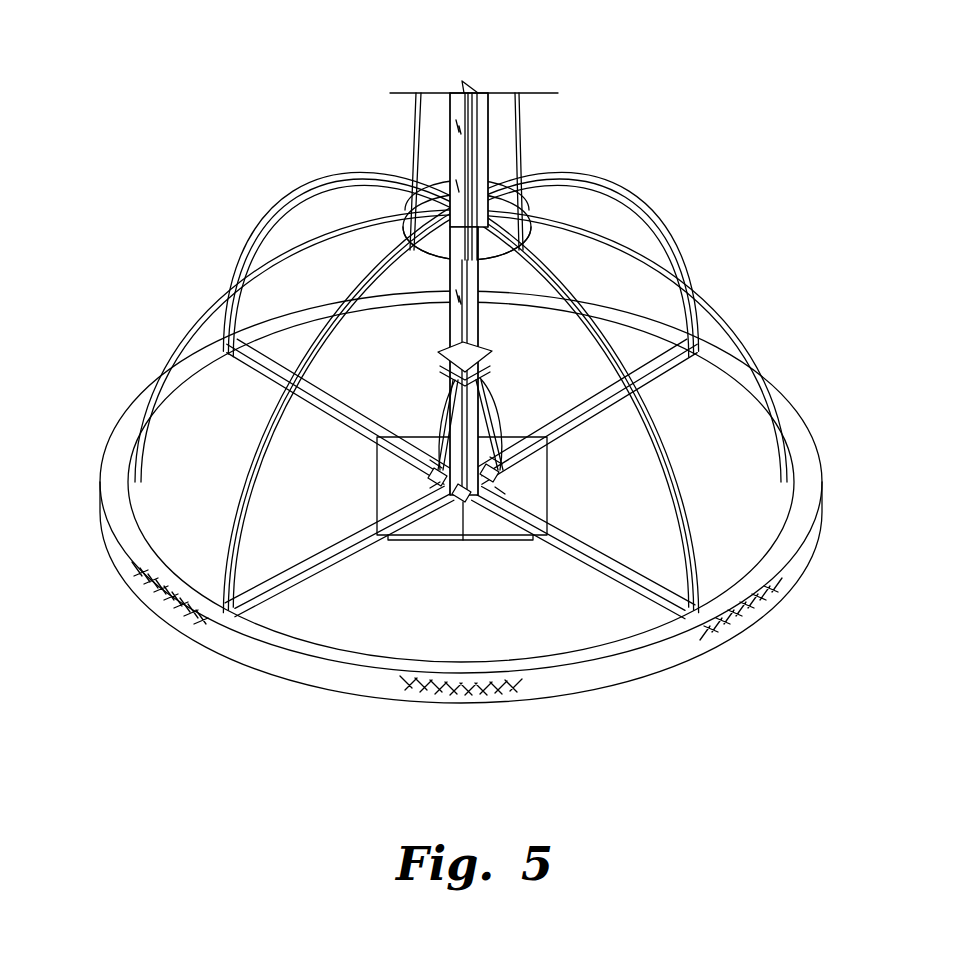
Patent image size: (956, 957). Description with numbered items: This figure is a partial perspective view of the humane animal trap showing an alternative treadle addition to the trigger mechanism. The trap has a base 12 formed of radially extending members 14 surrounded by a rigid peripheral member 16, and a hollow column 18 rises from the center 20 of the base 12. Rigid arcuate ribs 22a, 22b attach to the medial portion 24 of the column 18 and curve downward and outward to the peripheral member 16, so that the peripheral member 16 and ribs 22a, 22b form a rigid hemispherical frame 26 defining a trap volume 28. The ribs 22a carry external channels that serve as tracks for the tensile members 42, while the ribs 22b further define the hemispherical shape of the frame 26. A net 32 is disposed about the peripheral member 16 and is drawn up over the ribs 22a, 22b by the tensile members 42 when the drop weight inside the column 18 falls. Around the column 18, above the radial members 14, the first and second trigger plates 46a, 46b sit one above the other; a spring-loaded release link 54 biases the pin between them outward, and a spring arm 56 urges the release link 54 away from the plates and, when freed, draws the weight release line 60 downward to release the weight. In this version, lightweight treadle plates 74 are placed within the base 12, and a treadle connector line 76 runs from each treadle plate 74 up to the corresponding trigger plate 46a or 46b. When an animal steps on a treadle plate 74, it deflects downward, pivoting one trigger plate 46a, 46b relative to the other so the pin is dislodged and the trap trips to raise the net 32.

The base 12 is at (268, 658).
The radially extending members 14 is at (255, 367).
The rigid peripheral member 16 is at (615, 660).
The hollow column 18 is at (452, 92).
The center 20 is at (392, 486).
The arcuate ribs 22a is at (630, 188).
The arcuate ribs 22b is at (168, 365).
The medial portion 24 is at (432, 220).
The hemispherical frame 26 is at (262, 188).
The trap volume 28 is at (640, 237).
The net 32 is at (150, 596).
The tensile members 42 is at (416, 120).
The first trigger plate 46a is at (447, 352).
The second trigger plate 46b is at (447, 372).
The release link 54 is at (487, 378).
The spring arm 56 is at (514, 406).
The weight release line 60 is at (498, 302).
The treadle plates 74 is at (445, 440).
The treadle connector line 76 is at (455, 386).